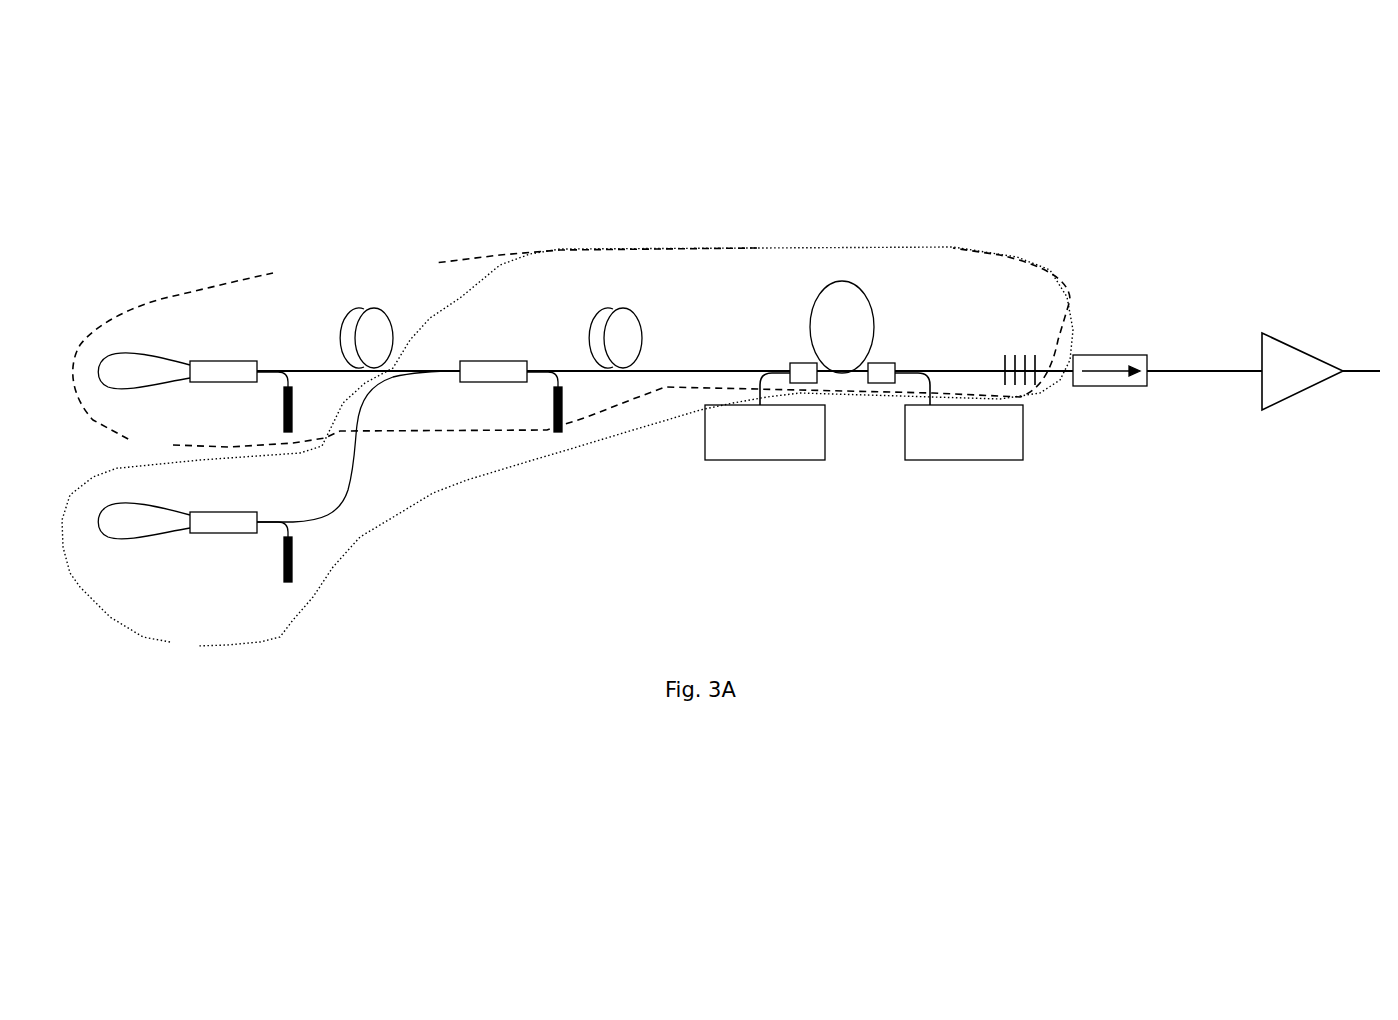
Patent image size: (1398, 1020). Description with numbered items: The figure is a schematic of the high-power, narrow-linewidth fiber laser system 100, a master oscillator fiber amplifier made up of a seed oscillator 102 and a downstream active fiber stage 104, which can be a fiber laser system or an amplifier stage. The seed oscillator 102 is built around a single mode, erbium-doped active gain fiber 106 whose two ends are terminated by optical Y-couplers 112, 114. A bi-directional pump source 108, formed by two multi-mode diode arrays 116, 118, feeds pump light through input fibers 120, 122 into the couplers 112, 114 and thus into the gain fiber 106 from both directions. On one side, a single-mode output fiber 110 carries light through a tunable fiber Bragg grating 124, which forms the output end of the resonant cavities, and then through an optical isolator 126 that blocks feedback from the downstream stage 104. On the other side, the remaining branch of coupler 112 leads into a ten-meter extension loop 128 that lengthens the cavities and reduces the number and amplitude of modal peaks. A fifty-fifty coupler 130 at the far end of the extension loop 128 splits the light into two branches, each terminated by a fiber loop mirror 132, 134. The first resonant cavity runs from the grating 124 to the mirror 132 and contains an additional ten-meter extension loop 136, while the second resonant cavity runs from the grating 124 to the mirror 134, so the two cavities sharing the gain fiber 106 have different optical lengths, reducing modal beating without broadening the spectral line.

The high-power narrow-linewidth fiber laser system 100 is at (1048, 585).
The seed oscillator 102 is at (553, 573).
The downstream active fiber stage 104 is at (1290, 335).
The active gain fiber 106 is at (873, 317).
The bi-directional pump source 108 is at (846, 489).
The single-mode output fiber 110 is at (943, 370).
The optical Y-coupler 112 is at (790, 347).
The optical Y-coupler 114 is at (910, 355).
The multi-mode diode array 116 is at (715, 460).
The multi-mode diode array 118 is at (990, 463).
The input fiber 120 is at (757, 377).
The input fiber 122 is at (910, 373).
The tunable fiber Bragg grating 124 is at (1025, 345).
The optical isolator 126 is at (1097, 343).
The extension loop 128 is at (640, 335).
The 50/50 coupler 130 is at (500, 393).
The fiber loop mirror 132 is at (128, 343).
The fiber loop mirror 134 is at (110, 550).
The extension loop 136 is at (337, 345).